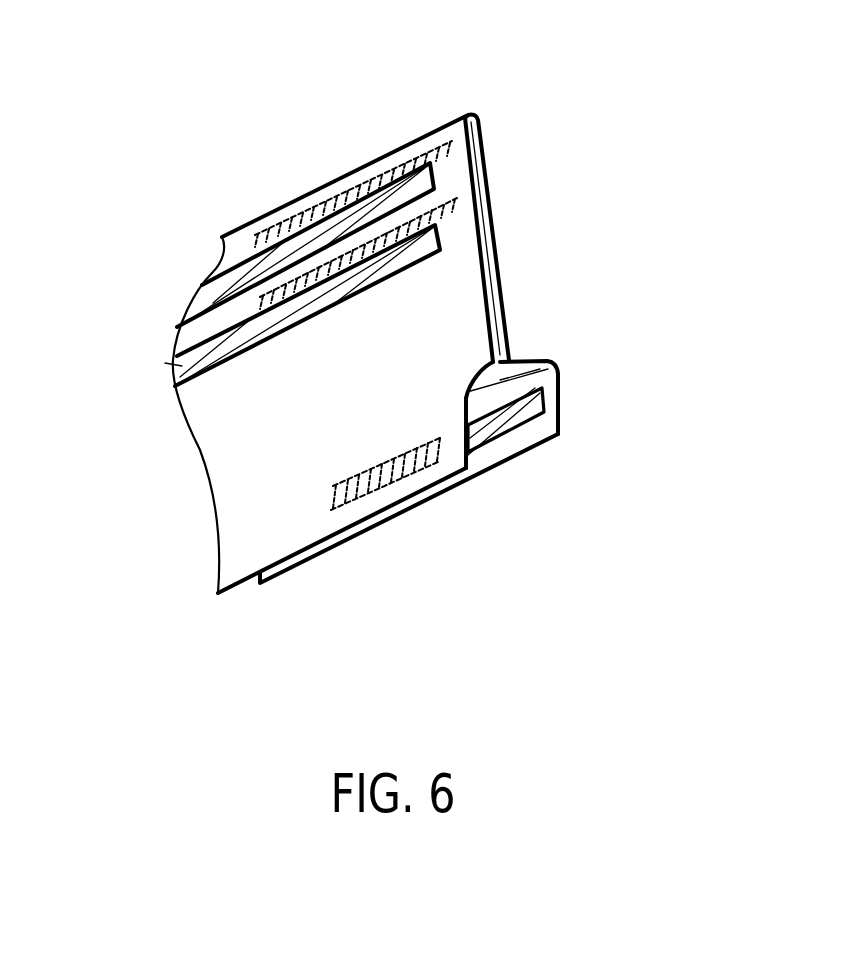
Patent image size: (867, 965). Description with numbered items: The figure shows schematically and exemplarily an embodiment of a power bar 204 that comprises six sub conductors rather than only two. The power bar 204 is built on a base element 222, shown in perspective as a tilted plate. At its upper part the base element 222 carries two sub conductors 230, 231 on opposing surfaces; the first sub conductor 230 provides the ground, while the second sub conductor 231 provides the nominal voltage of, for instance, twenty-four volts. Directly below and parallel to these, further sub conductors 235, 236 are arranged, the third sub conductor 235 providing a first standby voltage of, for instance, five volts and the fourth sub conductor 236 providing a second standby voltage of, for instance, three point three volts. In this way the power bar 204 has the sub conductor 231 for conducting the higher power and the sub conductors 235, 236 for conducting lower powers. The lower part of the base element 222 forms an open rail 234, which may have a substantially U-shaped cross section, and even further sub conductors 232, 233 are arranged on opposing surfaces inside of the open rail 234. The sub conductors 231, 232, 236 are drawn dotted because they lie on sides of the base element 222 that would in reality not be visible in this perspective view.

The power bar 204 is at (506, 96).
The base element 222 is at (460, 290).
The first sub conductor 230 is at (362, 213).
The second sub conductor 231 is at (455, 145).
The fourth sub conductor 236 is at (456, 213).
The open rail 234 is at (567, 402).
The sub conductor 233 is at (490, 430).
The sub conductor 232 is at (395, 478).
The third sub conductor 235 is at (182, 367).